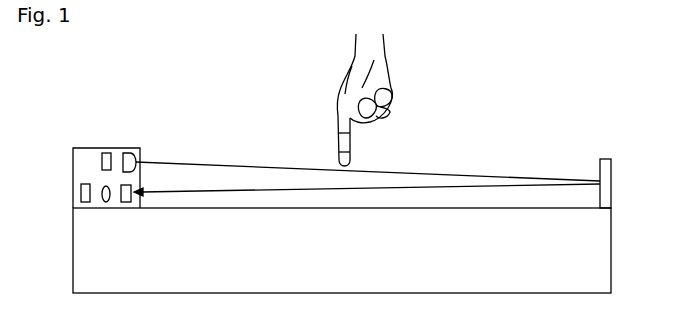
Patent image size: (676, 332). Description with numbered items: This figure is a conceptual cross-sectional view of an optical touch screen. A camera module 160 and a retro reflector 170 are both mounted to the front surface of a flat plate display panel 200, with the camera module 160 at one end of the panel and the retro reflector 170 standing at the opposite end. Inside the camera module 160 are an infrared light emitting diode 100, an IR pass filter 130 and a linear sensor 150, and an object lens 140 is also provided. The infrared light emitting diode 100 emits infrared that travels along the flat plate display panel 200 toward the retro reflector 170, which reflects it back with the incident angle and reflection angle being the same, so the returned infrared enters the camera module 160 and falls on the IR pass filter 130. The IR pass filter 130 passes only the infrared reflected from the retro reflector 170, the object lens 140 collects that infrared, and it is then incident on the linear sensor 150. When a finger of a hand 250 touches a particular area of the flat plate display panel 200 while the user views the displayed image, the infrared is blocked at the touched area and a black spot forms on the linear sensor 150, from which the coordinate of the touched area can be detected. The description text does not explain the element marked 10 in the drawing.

The light source 10 is at (133, 153).
The infrared light emitting diode 100 is at (107, 153).
The IR pass filter 130 is at (128, 202).
The object lens 140 is at (105, 202).
The linear sensor 150 is at (81, 190).
The camera module 160 is at (73, 155).
The retro reflector 170 is at (604, 159).
The flat plate display panel 200 is at (372, 283).
The hand 250 is at (384, 77).